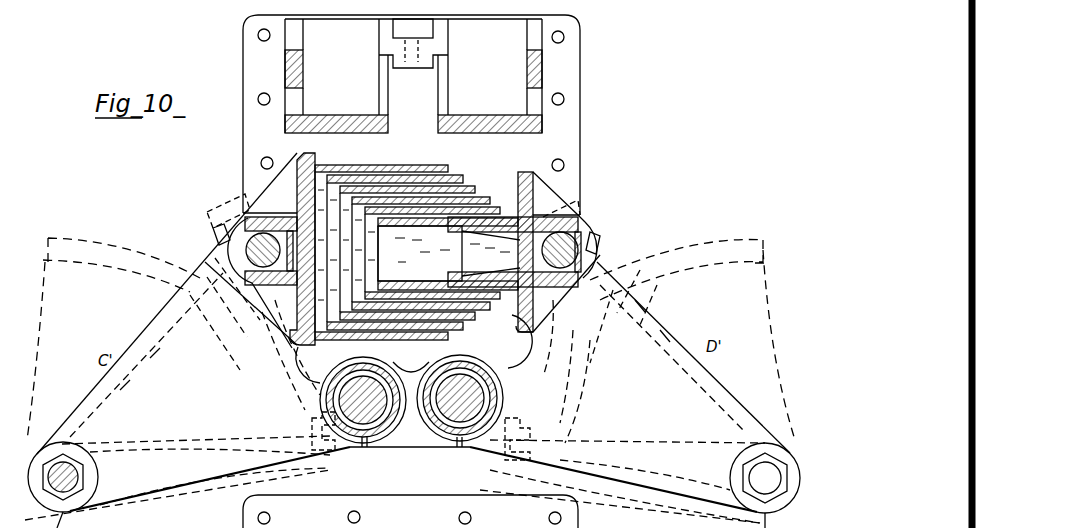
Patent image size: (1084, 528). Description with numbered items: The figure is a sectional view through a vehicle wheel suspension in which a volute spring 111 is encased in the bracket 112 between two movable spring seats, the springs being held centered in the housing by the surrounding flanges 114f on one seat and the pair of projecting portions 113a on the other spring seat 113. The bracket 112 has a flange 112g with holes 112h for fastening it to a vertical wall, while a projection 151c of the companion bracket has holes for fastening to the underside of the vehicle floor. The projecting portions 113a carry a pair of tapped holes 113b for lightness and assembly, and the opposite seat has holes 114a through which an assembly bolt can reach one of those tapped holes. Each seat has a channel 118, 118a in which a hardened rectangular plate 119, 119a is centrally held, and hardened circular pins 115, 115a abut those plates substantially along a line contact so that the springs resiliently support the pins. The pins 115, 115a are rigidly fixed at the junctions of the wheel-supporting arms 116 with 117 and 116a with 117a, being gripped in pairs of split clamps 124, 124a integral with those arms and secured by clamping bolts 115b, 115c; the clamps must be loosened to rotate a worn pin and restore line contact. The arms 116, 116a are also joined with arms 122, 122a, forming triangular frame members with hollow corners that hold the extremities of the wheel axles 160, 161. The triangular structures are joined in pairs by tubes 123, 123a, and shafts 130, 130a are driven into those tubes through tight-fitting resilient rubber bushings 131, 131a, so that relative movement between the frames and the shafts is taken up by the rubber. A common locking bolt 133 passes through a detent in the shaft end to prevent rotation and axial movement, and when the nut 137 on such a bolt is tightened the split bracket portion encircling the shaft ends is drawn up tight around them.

The volute spring 111 is at (405, 165).
The bracket 112 is at (413, 76).
The flange 112g is at (573, 88).
The holes 112h is at (565, 164).
The spring seat 113 is at (567, 220).
The projecting portions 113a is at (467, 260).
The tapped holes 113b is at (520, 188).
The holes 114a is at (247, 350).
The surrounding flanges 114f is at (322, 162).
The fixed pin 115 is at (533, 252).
The fixed pin 115a is at (250, 252).
The clamping bolt 115b is at (603, 238).
The clamping bolt 115c is at (218, 230).
The wheel-supporting arm 116 is at (661, 312).
The wheel-supporting arm 116a is at (167, 303).
The wheel-supporting arm 117 is at (503, 371).
The wheel-supporting arm 117a is at (351, 371).
The channel 118 is at (568, 285).
The channel 118a is at (276, 292).
The hardened rectangular plate 119 is at (597, 257).
The hardened rectangular plate 119a is at (297, 188).
The arm 122 is at (598, 463).
The arm 122a is at (228, 467).
The tube 123 is at (480, 448).
The tube 123a is at (378, 445).
The split clamp 124 is at (594, 225).
The split clamp 124a is at (228, 222).
The shaft 130 is at (480, 375).
The shaft 130a is at (348, 420).
The resilient rubber bushing 131 is at (490, 418).
The resilient rubber bushing 131a is at (378, 372).
The locking bolt 133 is at (312, 418).
The nut 137 is at (508, 437).
The projection 151c is at (410, 511).
The axle 160 is at (753, 468).
The axle 161 is at (77, 463).